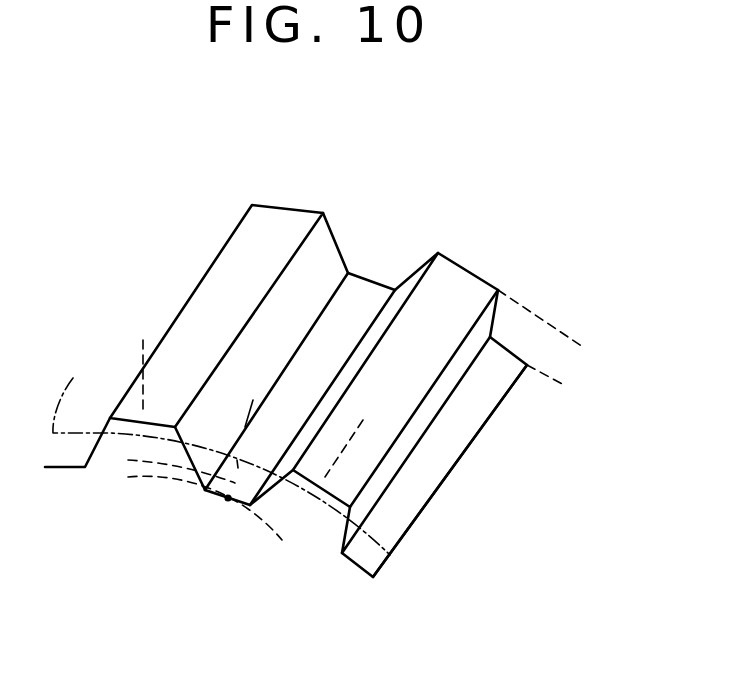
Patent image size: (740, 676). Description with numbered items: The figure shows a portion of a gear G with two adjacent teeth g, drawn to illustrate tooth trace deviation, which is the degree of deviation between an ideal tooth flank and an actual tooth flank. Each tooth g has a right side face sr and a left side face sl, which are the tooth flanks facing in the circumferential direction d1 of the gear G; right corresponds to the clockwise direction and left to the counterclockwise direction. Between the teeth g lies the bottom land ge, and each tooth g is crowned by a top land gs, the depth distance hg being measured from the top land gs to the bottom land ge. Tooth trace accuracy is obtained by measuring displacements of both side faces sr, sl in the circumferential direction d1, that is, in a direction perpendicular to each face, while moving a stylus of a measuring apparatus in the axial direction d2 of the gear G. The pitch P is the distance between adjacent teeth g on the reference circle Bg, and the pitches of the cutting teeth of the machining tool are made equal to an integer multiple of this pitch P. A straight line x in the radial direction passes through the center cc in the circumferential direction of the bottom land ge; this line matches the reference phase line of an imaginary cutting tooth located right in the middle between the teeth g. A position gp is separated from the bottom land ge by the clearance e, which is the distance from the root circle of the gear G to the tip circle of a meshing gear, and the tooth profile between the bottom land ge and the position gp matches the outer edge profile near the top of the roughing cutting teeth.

The gear G is at (417, 188).
The tooth g is at (277, 203).
The right side face sr is at (320, 230).
The bottom land ge is at (368, 285).
The left side face sl is at (407, 280).
The top land gs is at (475, 292).
The depth distance hg is at (577, 343).
The axial direction d2 is at (190, 440).
The pitch P is at (145, 352).
The reference circle Bg is at (221, 447).
The clearance e is at (132, 432).
The straight line x is at (237, 465).
The center cc is at (228, 500).
The position gp is at (279, 537).
The circumferential direction d1 is at (273, 605).